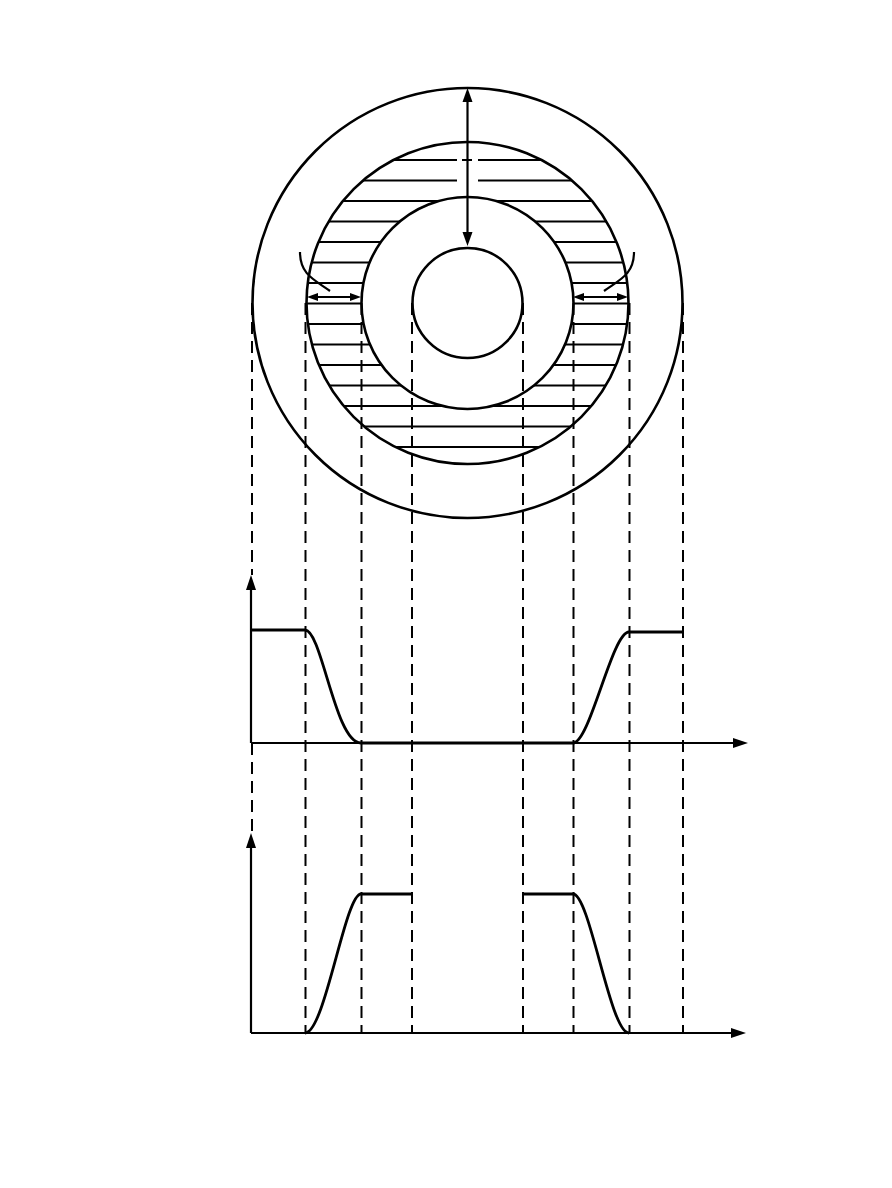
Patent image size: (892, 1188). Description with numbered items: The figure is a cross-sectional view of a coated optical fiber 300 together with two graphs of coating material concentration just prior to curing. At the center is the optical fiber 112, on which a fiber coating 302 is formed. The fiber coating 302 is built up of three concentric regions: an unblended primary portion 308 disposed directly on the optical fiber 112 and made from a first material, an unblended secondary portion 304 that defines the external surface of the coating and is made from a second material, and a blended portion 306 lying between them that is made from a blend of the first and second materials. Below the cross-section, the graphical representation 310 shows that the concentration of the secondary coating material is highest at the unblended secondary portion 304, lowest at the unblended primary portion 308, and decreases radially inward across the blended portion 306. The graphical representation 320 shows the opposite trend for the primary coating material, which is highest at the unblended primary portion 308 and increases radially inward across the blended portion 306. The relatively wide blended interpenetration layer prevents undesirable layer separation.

The coated optical fiber 300 is at (690, 72).
The fiber coating 302 is at (553, 102).
The unblended secondary portion 304 is at (662, 260).
The blended portion 306 is at (363, 187).
The unblended primary portion 308 is at (377, 253).
The optical fiber 112 is at (484, 316).
The graphical representation of the concentration of the secondary coating material 310 is at (643, 631).
The graphical representation of the concentration of the primary coating material 320 is at (600, 978).